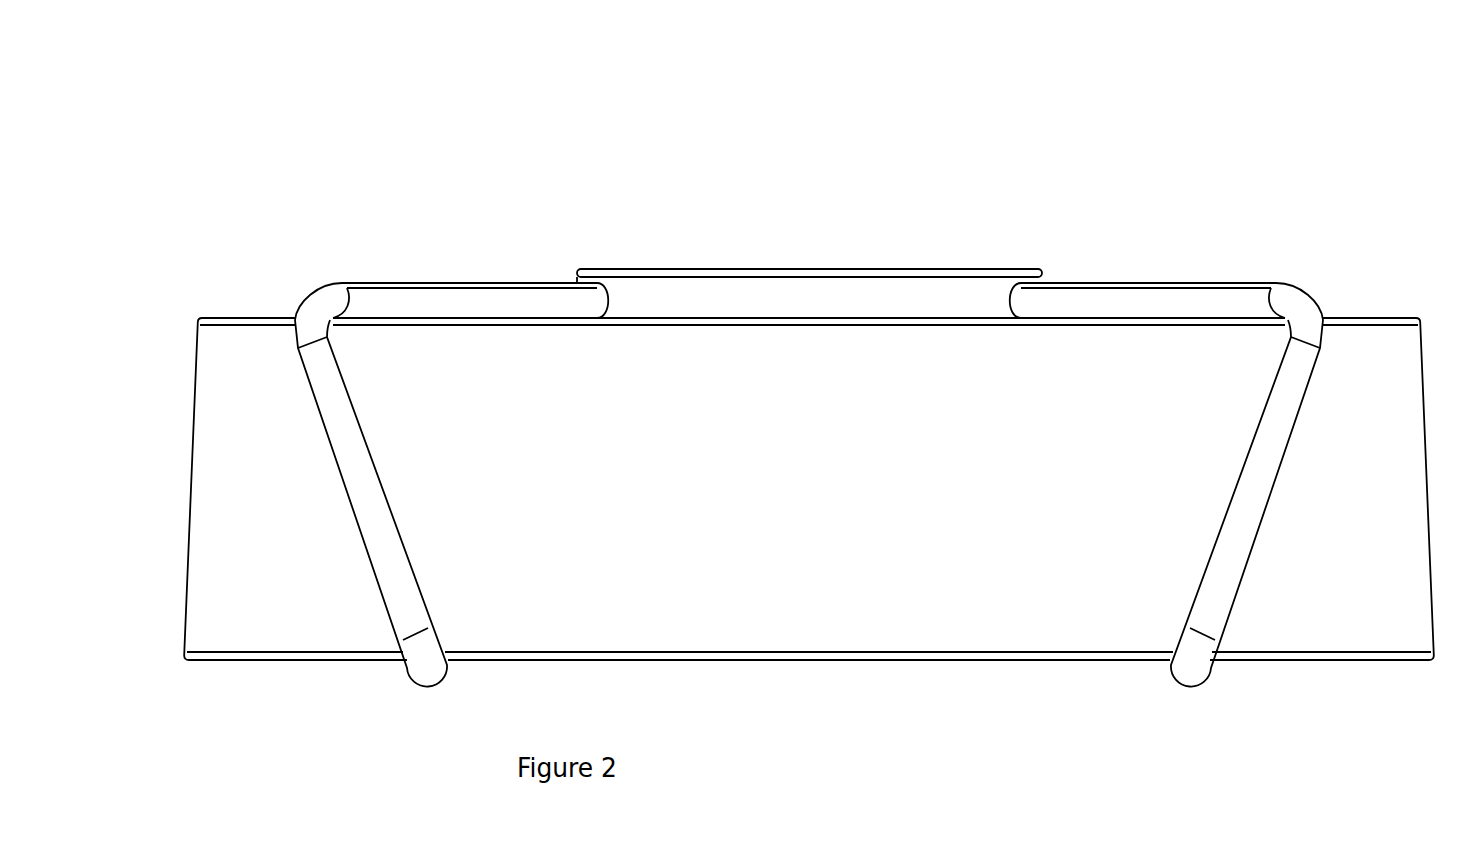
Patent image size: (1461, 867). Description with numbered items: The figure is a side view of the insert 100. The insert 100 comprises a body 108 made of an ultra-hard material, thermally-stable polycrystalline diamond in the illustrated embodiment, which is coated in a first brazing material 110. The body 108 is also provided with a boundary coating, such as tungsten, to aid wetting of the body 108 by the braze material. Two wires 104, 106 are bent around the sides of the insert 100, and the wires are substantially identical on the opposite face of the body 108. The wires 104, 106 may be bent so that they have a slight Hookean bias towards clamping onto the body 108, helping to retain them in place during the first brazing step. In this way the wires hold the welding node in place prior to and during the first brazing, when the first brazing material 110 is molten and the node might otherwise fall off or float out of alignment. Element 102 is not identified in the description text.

The insert 100 is at (150, 112).
The central contact tab 102 is at (750, 268).
The wire 104 is at (402, 290).
The wire 106 is at (1152, 288).
The body 108 is at (897, 580).
The first brazing material 110 is at (200, 320).